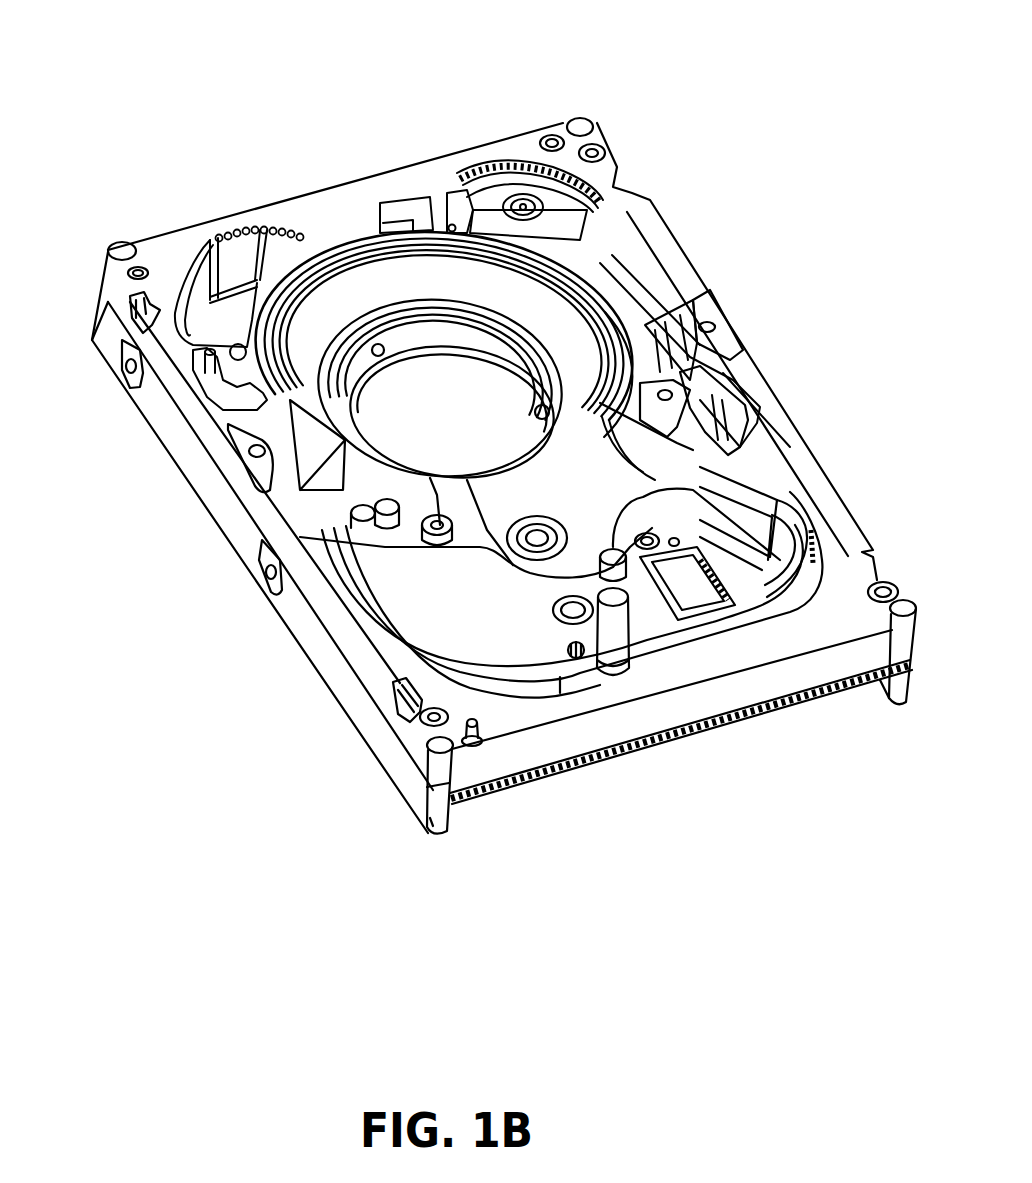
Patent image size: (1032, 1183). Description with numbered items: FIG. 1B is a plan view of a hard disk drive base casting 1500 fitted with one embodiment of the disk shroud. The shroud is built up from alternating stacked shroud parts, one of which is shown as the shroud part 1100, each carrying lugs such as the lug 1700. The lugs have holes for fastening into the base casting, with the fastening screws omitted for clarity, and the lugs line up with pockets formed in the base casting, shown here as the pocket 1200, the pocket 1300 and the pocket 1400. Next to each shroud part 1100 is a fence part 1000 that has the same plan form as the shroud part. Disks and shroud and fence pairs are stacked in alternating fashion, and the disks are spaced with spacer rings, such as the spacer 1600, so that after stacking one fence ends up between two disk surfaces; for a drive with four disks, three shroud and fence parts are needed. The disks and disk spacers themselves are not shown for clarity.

The fence part 1000 is at (575, 292).
The shroud part 1100 is at (518, 260).
The Pocket 1 1200 is at (662, 337).
The Pocket 2 1300 is at (465, 200).
The Pocket 3 1400 is at (238, 347).
The Base Casting 1500 is at (398, 185).
The Spacer 1600 is at (310, 267).
The lugs 1700 is at (448, 200).